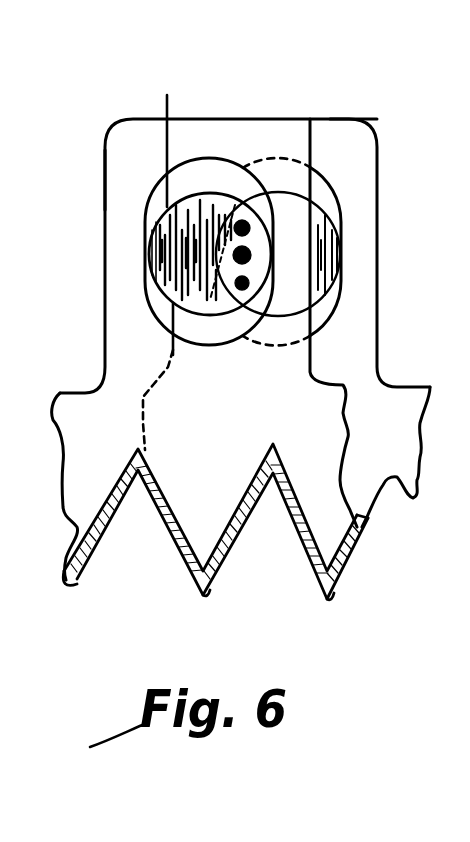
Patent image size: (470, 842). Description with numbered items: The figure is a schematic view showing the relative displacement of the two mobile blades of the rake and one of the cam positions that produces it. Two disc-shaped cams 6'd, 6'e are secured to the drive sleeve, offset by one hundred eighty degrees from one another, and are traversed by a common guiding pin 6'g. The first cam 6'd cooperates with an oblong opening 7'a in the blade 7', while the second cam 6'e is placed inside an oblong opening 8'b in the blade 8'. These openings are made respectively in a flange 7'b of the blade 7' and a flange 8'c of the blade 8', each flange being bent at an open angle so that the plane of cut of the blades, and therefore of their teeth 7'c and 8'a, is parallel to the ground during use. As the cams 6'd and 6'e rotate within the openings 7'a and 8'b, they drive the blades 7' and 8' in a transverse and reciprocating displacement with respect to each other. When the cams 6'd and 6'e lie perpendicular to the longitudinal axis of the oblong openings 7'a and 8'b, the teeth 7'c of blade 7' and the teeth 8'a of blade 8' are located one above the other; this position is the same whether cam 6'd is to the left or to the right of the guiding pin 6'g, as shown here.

The blade 7' is at (235, 349).
The oblong opening 7'a is at (181, 249).
The flange 7'b is at (109, 129).
The teeth 7'c is at (215, 557).
The blade 8' is at (370, 323).
The teeth 8'a is at (393, 587).
The oblong opening 8'b is at (340, 251).
The flange 8'c is at (368, 92).
The cam 6'd is at (149, 251).
The cam 6'e is at (326, 234).
The guiding pin 6'g is at (210, 312).